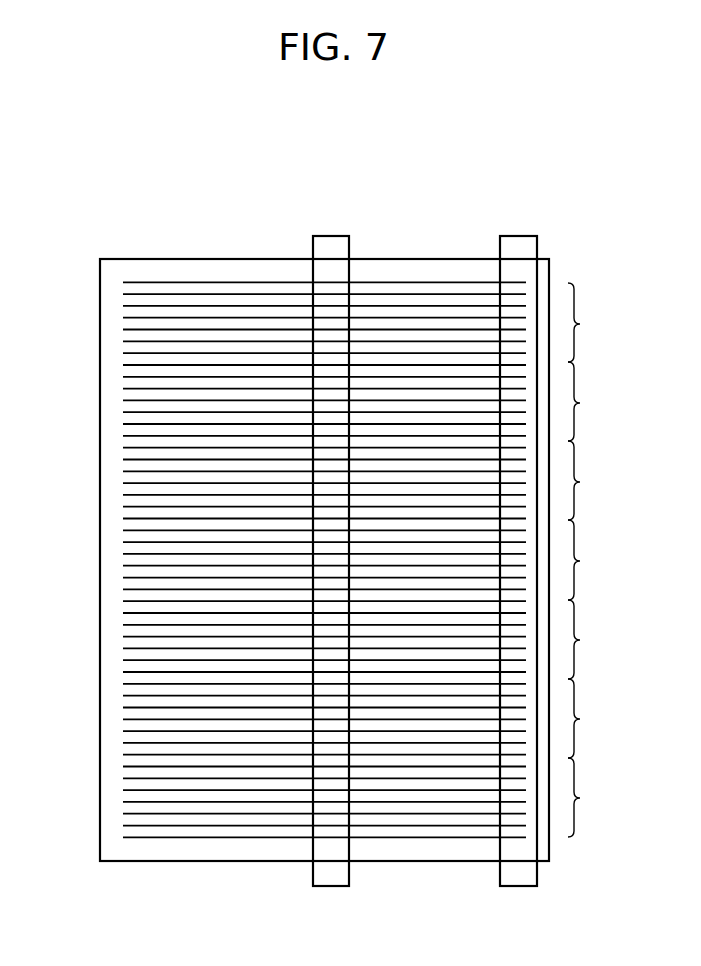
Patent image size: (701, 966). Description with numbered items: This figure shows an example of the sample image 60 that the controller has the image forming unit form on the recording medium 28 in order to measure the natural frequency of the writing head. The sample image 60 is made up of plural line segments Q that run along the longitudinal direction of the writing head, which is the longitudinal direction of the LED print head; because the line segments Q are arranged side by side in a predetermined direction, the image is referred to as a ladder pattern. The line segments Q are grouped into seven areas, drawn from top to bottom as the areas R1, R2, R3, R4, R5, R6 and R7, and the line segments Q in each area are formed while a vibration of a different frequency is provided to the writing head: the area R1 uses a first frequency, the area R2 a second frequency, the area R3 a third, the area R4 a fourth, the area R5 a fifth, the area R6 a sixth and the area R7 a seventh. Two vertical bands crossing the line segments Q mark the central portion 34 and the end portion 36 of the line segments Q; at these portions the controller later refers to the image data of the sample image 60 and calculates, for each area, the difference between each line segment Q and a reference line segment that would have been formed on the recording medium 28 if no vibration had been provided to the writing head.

The sample image 60 is at (284, 550).
The recording medium 28 is at (100, 470).
The central portion 34 is at (333, 236).
The end portion 36 is at (521, 236).
The line segments Q is at (183, 839).
The area R1 is at (591, 322).
The area R2 is at (591, 401).
The area R3 is at (591, 480).
The area R4 is at (591, 560).
The area R5 is at (591, 639).
The area R6 is at (591, 718).
The area R7 is at (591, 797).